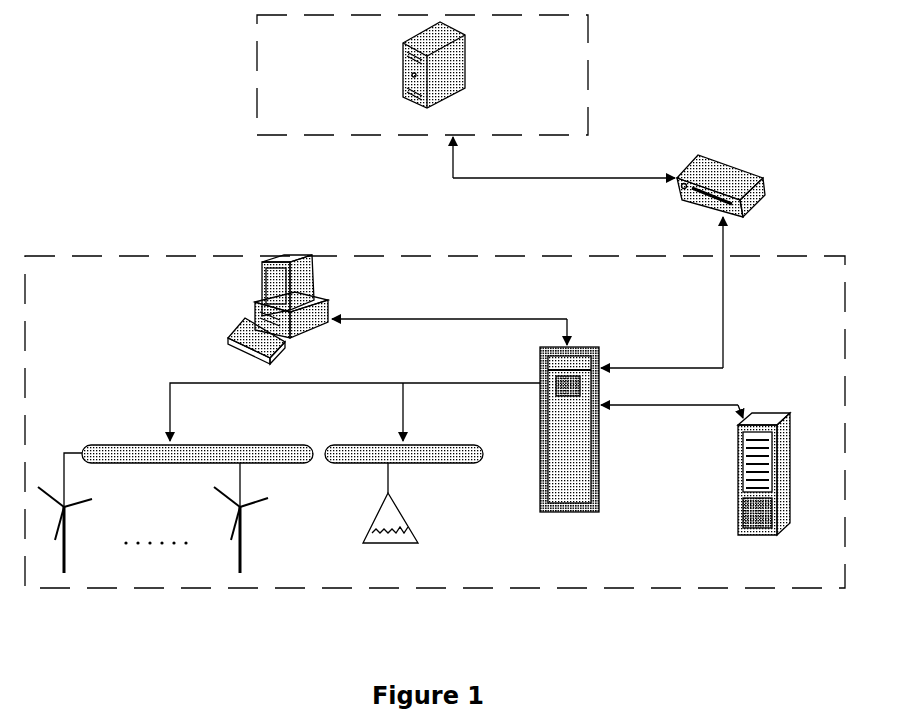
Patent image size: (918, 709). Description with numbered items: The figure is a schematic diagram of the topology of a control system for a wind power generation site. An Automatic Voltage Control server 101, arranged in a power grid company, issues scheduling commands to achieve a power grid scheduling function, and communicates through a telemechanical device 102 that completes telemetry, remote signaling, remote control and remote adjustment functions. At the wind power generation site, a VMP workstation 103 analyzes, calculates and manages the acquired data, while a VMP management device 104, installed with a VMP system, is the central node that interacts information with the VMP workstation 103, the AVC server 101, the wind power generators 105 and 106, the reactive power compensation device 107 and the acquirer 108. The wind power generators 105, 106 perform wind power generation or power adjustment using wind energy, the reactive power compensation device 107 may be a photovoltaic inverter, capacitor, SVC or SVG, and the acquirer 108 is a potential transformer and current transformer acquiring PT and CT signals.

The Automatic Voltage Control (AVC) control system 101 is at (465, 60).
The telemechanical device 102 is at (740, 163).
The VMP workstation 103 is at (312, 290).
The VMP management device 104 is at (587, 349).
The wind power generator 105 is at (92, 499).
The wind power generator 106 is at (268, 498).
The reactive power compensation device 107 is at (405, 527).
The acquirer 108 is at (777, 415).